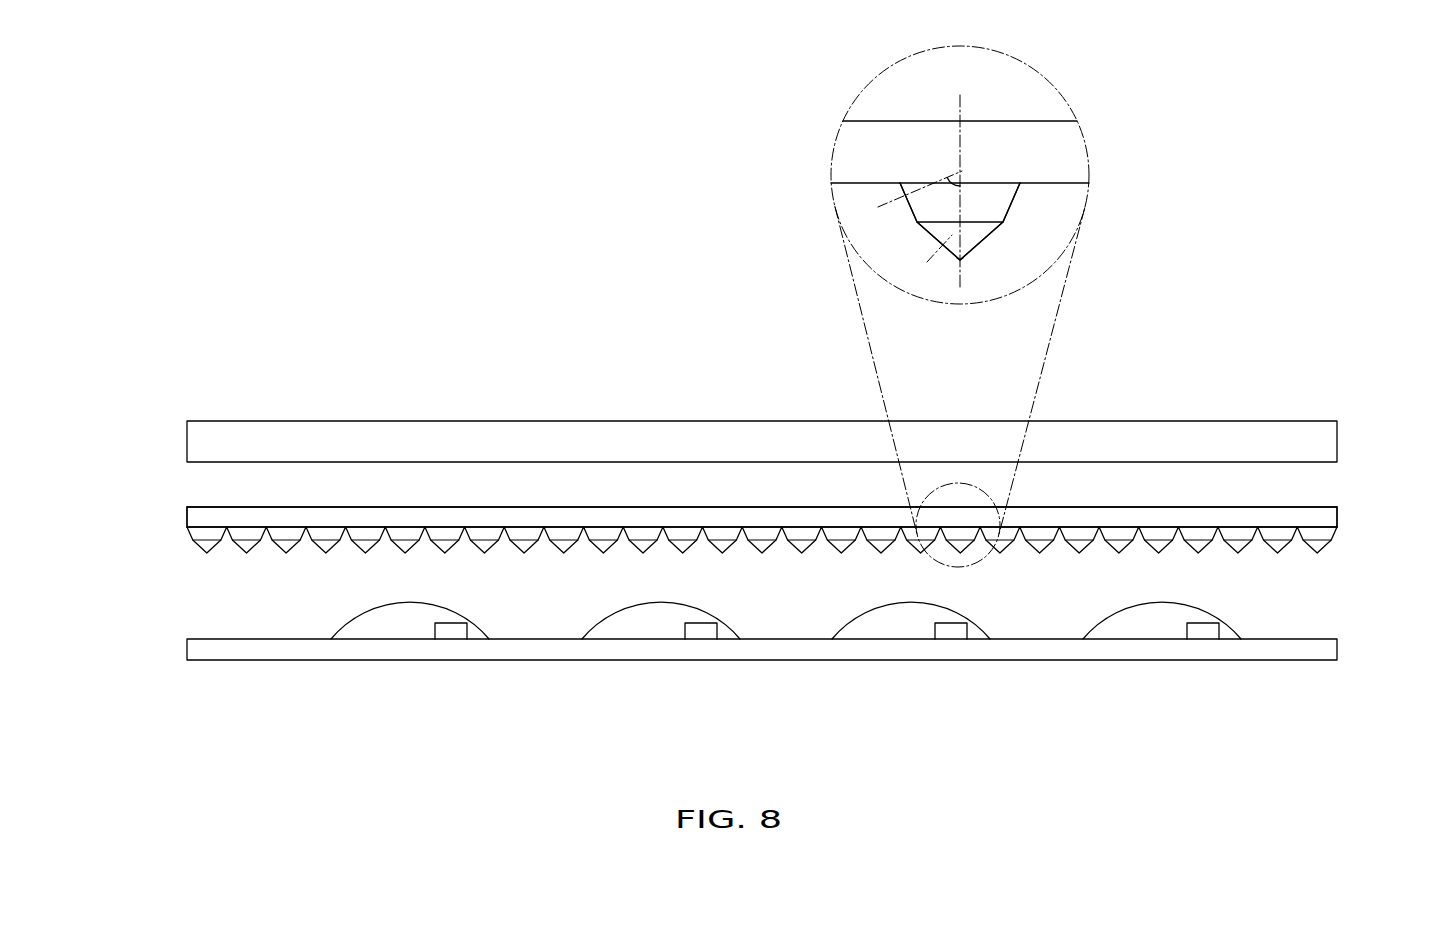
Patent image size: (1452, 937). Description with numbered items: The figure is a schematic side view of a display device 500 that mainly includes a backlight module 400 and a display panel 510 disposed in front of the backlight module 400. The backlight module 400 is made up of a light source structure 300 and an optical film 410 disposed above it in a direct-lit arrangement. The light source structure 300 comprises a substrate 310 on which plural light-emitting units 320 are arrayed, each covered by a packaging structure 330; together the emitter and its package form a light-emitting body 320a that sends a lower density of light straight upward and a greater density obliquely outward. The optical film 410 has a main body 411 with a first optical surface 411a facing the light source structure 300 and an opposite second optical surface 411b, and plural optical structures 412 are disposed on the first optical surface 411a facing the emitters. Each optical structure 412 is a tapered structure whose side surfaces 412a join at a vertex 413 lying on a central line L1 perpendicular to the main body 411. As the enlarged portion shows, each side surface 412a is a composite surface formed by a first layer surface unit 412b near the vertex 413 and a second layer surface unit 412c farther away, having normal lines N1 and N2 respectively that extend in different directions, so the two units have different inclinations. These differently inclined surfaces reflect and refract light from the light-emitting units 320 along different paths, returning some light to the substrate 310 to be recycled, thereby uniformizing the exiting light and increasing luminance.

The display device 500 is at (193, 261).
The display panel 510 is at (235, 435).
The backlight module 400 is at (1350, 507).
The optical film 410 is at (1318, 505).
The main body 411 is at (1248, 517).
The first optical surface 411a is at (1217, 532).
The second optical surface 411b is at (1183, 506).
The optical structure 412 is at (907, 230).
The side surface 412a is at (1212, 175).
The first layer surface unit 412b is at (992, 238).
The second layer surface unit 412c is at (1013, 200).
The vertex 413 is at (962, 262).
The central line L1 is at (960, 110).
The normal line N1 is at (924, 257).
The normal line N2 is at (902, 197).
The light source structure 300 is at (185, 647).
The substrate 310 is at (538, 650).
The light-emitting unit 320 is at (448, 634).
The light-emitting body 320a is at (472, 738).
The packaging structure 330 is at (385, 627).